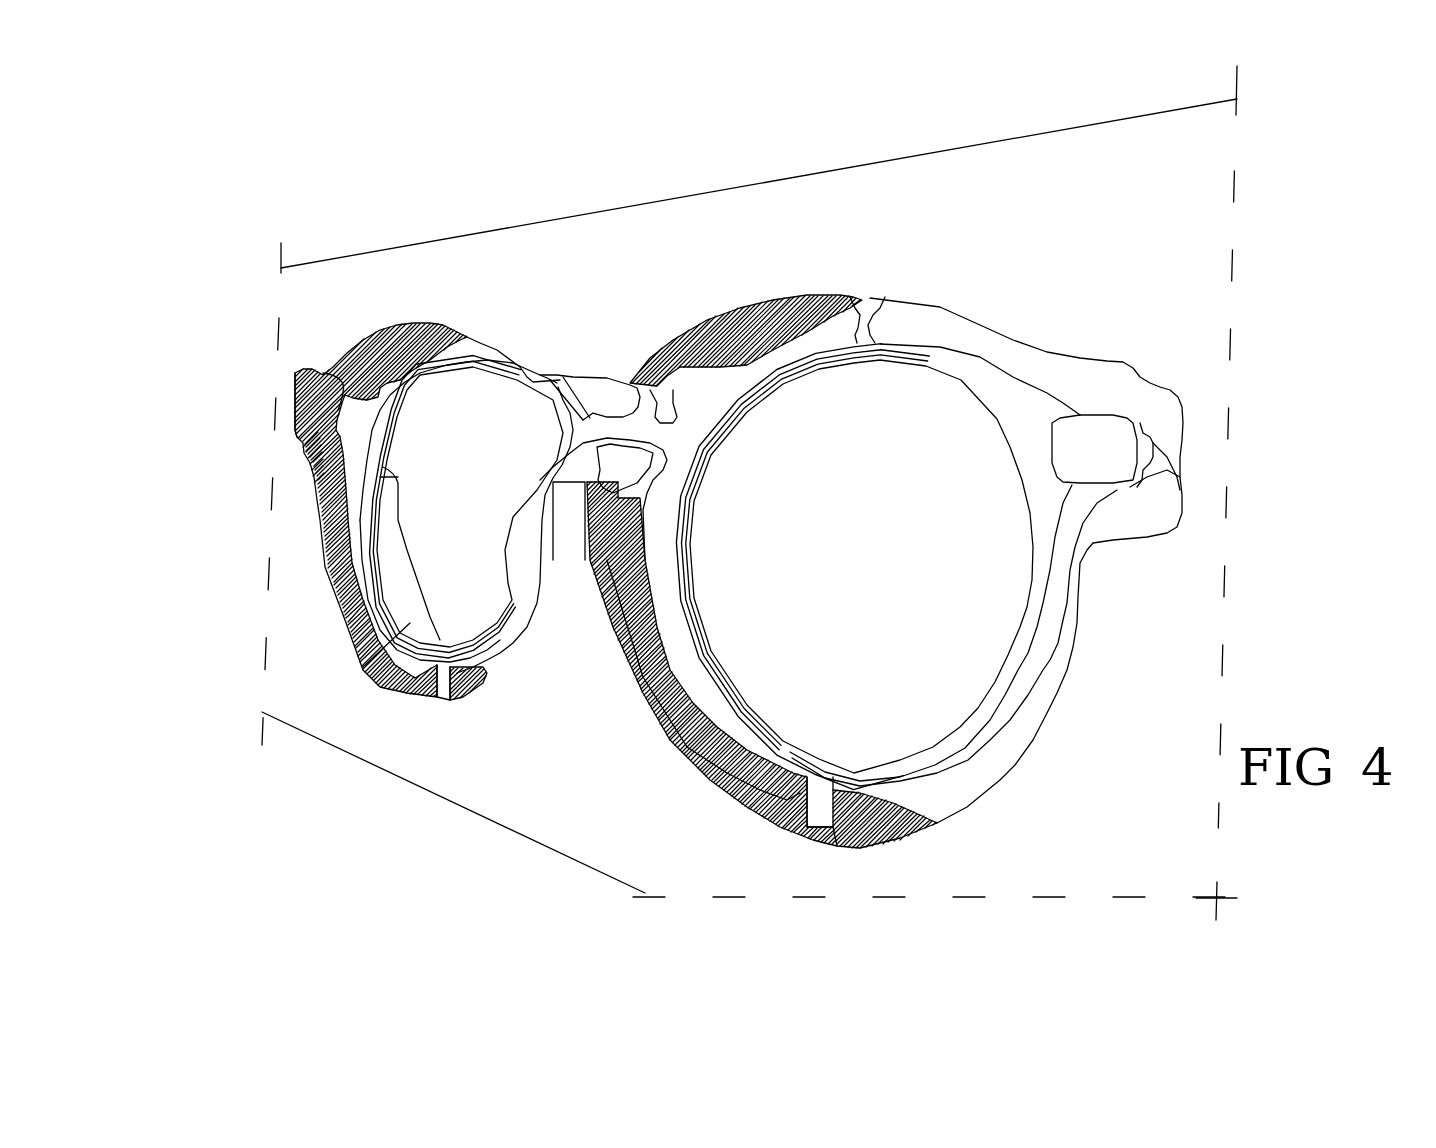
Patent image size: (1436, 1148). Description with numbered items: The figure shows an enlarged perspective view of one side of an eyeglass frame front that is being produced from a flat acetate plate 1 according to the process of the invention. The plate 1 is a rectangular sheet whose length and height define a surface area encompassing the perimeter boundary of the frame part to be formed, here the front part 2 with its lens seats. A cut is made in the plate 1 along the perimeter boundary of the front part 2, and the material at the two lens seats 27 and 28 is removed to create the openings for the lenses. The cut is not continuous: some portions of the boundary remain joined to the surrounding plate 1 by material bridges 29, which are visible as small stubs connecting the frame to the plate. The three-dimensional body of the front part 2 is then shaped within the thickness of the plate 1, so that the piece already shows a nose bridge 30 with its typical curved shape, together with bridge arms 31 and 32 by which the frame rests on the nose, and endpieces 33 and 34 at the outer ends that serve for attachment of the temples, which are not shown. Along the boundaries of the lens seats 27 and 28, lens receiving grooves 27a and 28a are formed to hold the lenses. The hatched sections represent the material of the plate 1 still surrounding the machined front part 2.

The acetate plate 1 is at (647, 234).
The front part 2 is at (957, 335).
The lens seat 27 is at (962, 638).
The lens receiving groove 27a is at (742, 698).
The lens seat 28 is at (443, 453).
The lens receiving groove 28a is at (363, 667).
The material bridge 29 is at (660, 392).
The nose bridge 30 is at (610, 427).
The bridge arm 31 is at (669, 566).
The bridge arm 32 is at (528, 533).
The endpiece 33 is at (1120, 443).
The endpiece 34 is at (295, 382).